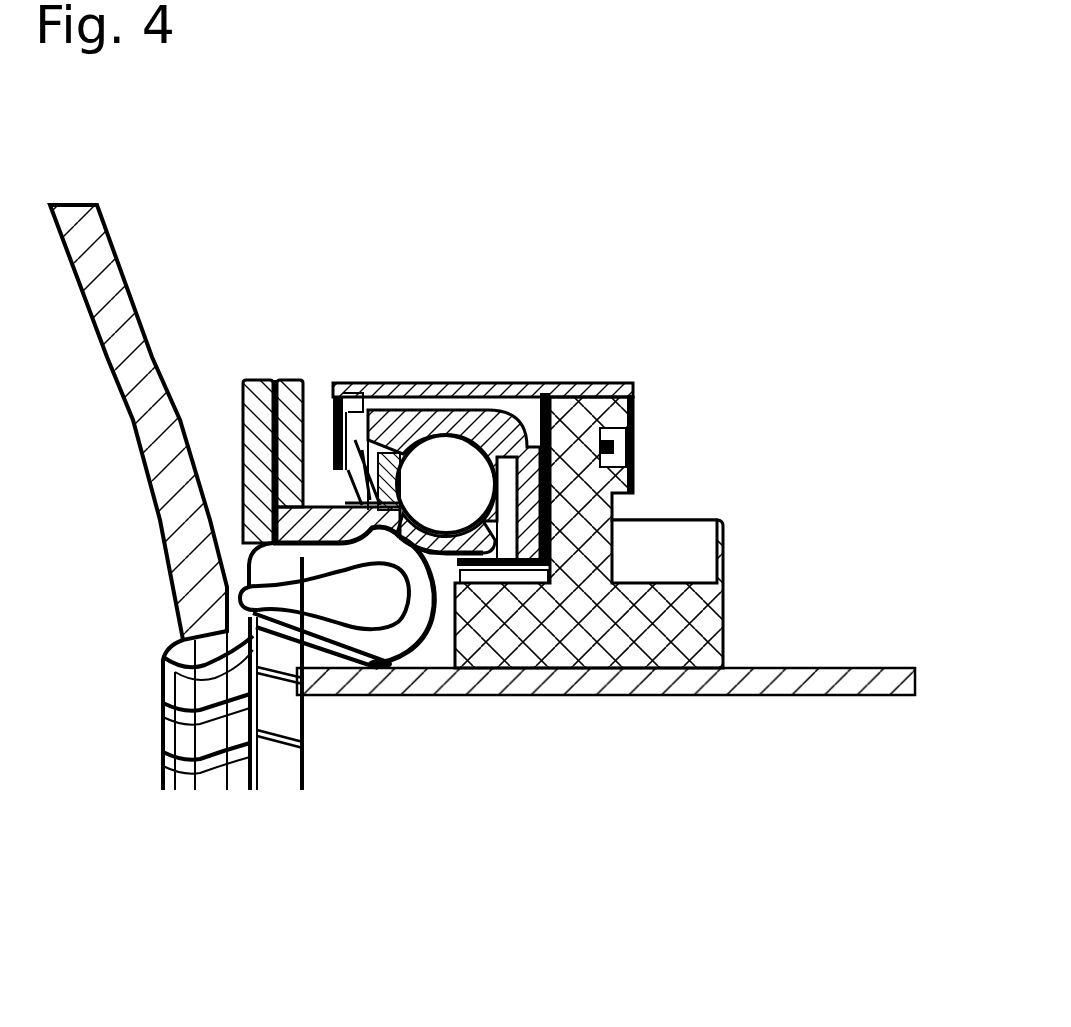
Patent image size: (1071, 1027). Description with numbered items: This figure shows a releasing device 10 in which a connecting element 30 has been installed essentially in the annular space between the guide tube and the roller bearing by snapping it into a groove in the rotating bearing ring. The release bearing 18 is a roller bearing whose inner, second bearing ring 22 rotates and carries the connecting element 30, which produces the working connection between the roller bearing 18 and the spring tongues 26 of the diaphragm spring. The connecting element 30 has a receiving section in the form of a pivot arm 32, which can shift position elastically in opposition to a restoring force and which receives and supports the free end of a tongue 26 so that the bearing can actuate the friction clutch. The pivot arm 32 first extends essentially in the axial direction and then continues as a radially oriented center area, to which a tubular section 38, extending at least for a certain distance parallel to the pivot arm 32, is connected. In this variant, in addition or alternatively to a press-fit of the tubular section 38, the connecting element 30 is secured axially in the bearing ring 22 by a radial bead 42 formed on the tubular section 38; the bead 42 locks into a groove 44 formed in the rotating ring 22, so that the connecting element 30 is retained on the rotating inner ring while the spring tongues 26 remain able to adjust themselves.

The releasing device 10 is at (431, 335).
The release bearing 18 is at (520, 383).
The inner, second bearing ring 22 is at (332, 510).
The spring tongues 26 is at (117, 298).
The connecting element 30 is at (240, 812).
The pivot arm 32 is at (307, 700).
The tubular section 38 is at (313, 557).
The radial bead 42 is at (377, 547).
The groove 44 is at (330, 511).